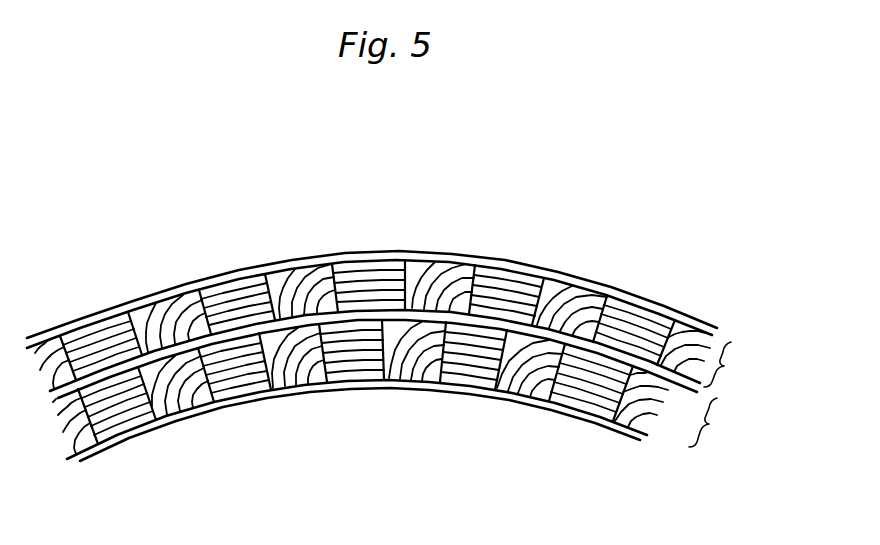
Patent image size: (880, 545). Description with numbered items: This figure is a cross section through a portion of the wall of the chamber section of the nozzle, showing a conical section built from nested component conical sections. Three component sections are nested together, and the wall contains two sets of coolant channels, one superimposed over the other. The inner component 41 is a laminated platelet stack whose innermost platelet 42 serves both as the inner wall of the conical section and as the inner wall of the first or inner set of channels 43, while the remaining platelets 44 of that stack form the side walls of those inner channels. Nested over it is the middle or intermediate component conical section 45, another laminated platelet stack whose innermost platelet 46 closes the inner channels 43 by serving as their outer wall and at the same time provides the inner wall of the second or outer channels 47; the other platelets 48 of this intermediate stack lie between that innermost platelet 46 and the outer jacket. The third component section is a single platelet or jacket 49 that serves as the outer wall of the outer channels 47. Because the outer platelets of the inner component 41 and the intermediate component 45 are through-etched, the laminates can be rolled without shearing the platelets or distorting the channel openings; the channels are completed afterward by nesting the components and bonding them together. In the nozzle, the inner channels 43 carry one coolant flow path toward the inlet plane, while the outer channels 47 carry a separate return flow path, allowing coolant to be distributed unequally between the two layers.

The inner component 41 is at (714, 422).
The innermost platelet 42 is at (617, 423).
The first or inner set of channels 43 is at (635, 382).
The remaining platelets 44 is at (580, 385).
The intermediate component conical section 45 is at (728, 364).
The innermost platelet of the intermediate component 46 is at (487, 320).
The channels of the outer layer 47 is at (290, 270).
The end-grain wood block 48 is at (362, 268).
The jacket 49 is at (412, 253).